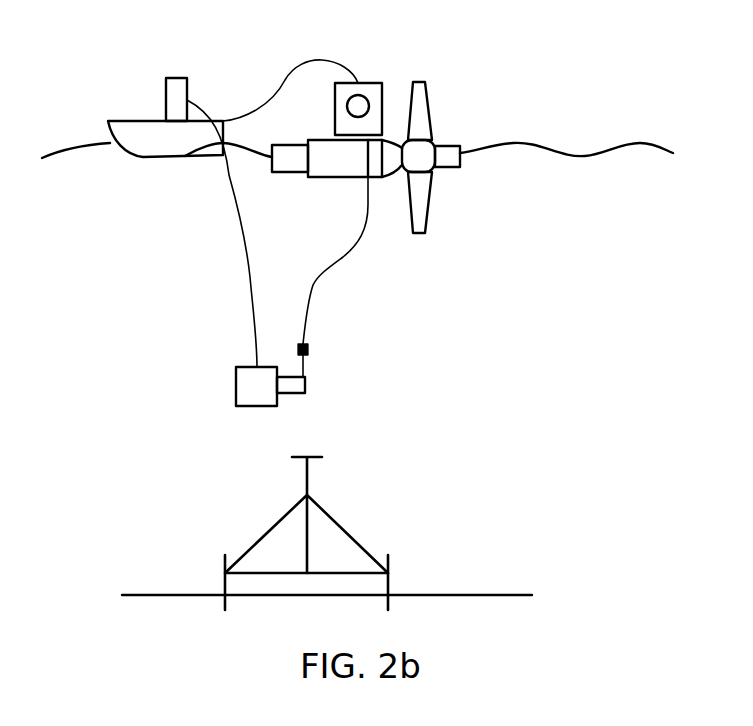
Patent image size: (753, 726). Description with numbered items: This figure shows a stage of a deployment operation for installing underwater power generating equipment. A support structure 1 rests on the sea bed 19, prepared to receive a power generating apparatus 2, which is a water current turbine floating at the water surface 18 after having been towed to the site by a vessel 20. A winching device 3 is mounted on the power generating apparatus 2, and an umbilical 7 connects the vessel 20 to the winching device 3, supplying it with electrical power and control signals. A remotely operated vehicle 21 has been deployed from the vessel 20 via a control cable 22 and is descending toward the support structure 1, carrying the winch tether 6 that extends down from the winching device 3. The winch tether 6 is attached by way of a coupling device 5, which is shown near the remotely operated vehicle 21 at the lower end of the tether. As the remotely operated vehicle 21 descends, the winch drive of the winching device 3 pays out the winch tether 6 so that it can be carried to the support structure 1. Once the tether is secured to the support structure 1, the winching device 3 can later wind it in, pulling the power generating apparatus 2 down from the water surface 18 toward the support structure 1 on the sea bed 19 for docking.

The support structure 1 is at (363, 543).
The power generating apparatus 2 is at (338, 176).
The winching device 3 is at (333, 110).
The coupling device 5 is at (308, 349).
The winch tether 6 is at (308, 310).
The umbilical 7 is at (337, 59).
The water surface 18 is at (495, 147).
The sea bed 19 is at (472, 592).
The vessel 20 is at (133, 138).
The remotely operated vehicle 21 is at (236, 385).
The control cable 22 is at (250, 277).